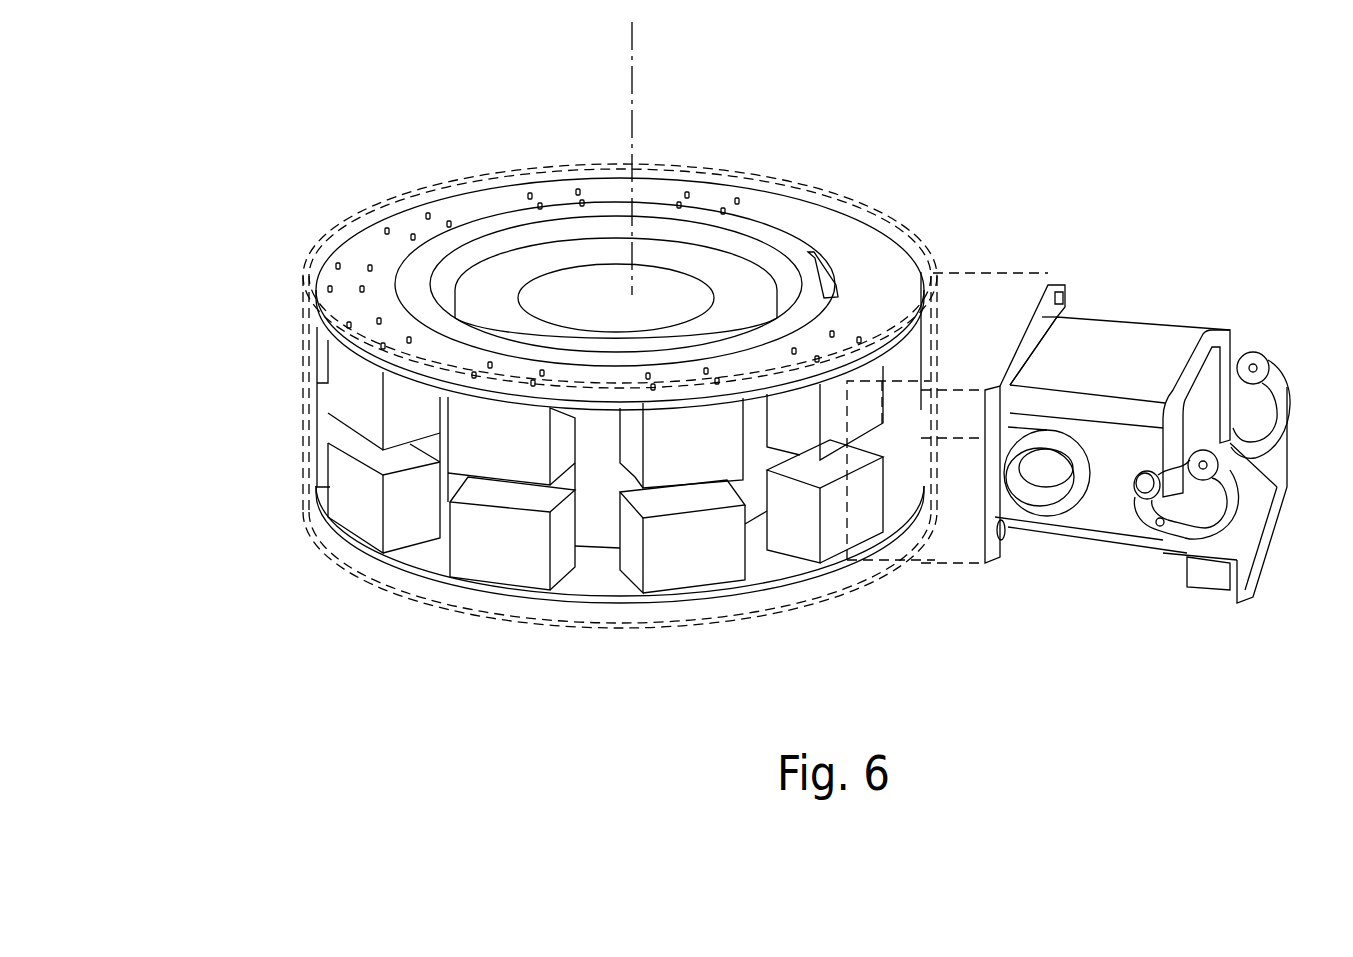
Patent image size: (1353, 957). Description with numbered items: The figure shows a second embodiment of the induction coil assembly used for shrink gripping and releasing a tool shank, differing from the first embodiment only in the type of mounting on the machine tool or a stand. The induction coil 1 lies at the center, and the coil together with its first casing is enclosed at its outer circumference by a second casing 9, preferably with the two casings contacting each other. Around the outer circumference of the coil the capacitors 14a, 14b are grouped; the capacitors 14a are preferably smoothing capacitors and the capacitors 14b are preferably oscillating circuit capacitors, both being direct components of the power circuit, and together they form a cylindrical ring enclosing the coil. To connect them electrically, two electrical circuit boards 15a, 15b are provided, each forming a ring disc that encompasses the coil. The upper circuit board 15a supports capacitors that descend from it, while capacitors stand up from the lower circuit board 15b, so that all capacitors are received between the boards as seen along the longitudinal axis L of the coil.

The longitudinal axis L is at (632, 47).
The induction coil 1 is at (540, 263).
The second casing 9 is at (706, 238).
The capacitors 14a is at (353, 395).
The capacitors 14b is at (497, 555).
The electrical circuit board 15a is at (867, 278).
The electrical circuit board 15b is at (768, 562).